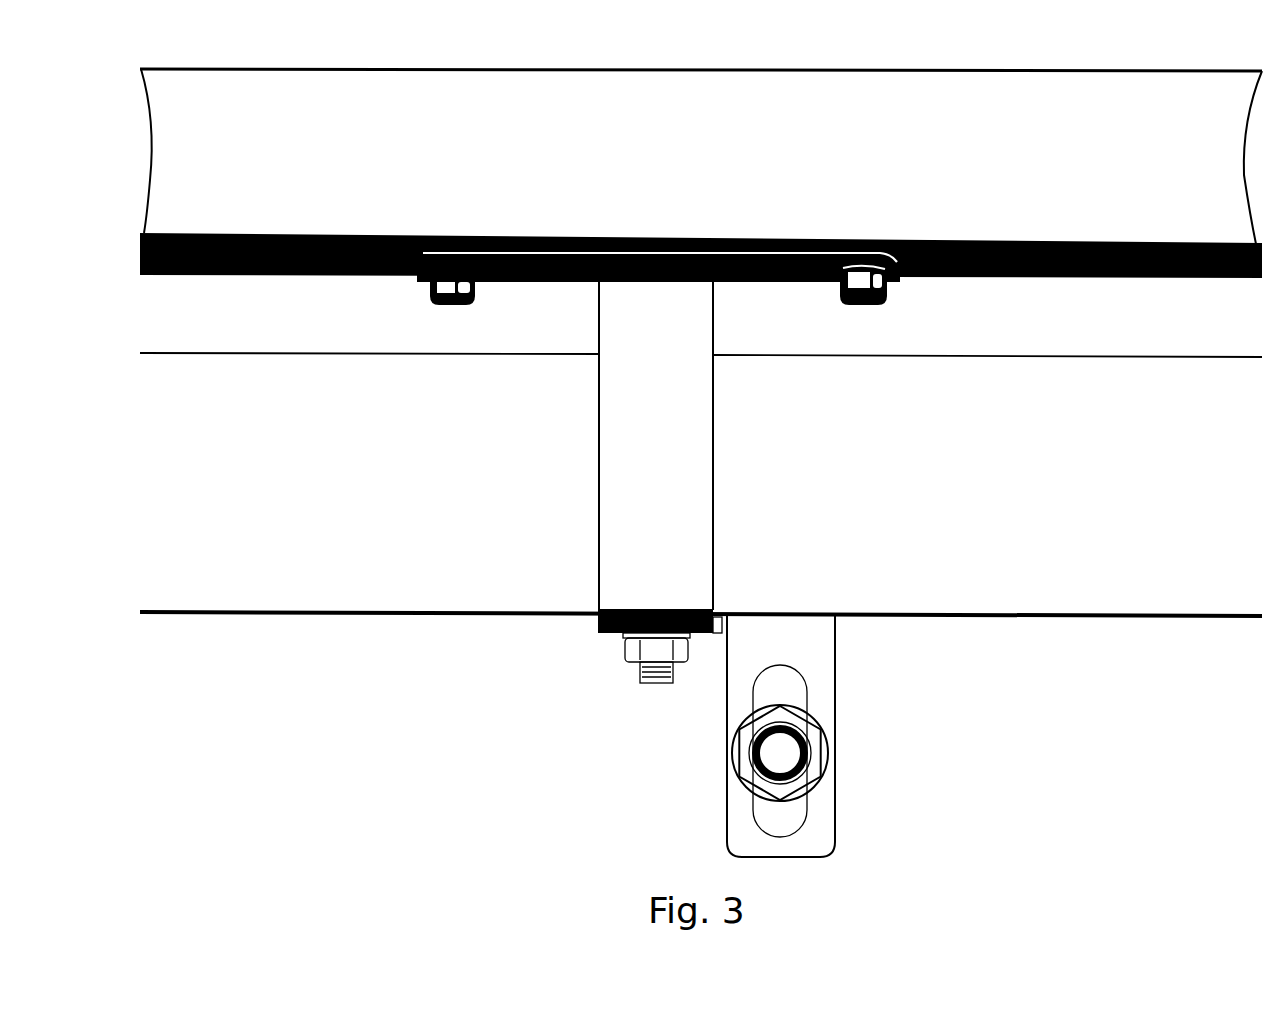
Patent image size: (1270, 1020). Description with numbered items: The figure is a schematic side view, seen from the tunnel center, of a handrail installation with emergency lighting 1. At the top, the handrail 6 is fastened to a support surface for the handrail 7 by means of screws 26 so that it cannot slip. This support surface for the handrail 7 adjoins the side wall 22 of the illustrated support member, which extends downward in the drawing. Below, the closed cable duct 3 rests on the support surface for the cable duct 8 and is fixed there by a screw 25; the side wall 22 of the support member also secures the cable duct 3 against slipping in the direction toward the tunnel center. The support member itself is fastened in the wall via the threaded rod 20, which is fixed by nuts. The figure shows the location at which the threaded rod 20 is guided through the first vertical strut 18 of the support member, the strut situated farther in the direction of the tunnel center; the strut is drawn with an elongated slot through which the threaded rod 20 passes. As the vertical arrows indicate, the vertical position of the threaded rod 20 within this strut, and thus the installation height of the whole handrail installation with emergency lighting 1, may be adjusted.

The handrail installation with emergency lighting 1 is at (295, 733).
The closed cable duct 3 is at (1128, 645).
The handrail 6 is at (1037, 213).
The support surface for the handrail 7 is at (563, 282).
The support surface for the cable duct 8 is at (608, 633).
The first vertical strut 18 is at (803, 640).
The threaded rod 20 is at (828, 755).
The side wall 22 is at (667, 307).
The screw 25 is at (650, 656).
The screws 26 is at (878, 286).